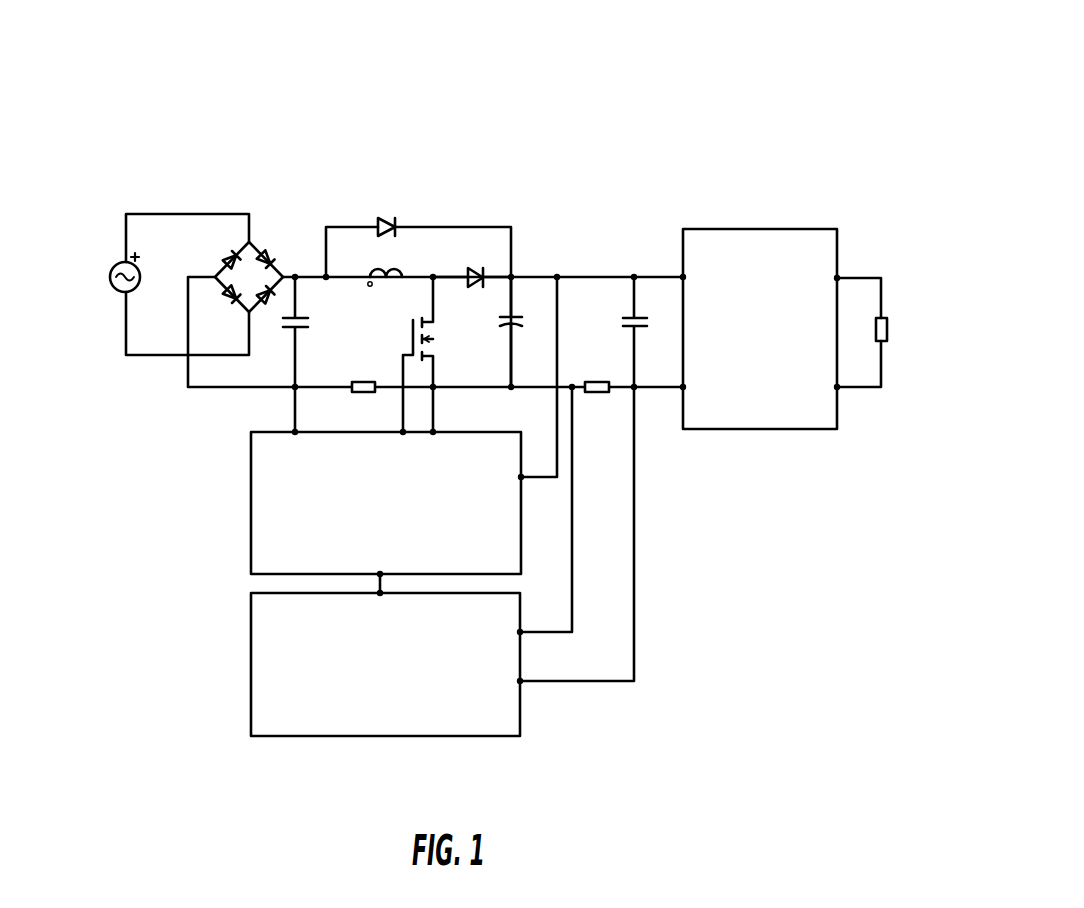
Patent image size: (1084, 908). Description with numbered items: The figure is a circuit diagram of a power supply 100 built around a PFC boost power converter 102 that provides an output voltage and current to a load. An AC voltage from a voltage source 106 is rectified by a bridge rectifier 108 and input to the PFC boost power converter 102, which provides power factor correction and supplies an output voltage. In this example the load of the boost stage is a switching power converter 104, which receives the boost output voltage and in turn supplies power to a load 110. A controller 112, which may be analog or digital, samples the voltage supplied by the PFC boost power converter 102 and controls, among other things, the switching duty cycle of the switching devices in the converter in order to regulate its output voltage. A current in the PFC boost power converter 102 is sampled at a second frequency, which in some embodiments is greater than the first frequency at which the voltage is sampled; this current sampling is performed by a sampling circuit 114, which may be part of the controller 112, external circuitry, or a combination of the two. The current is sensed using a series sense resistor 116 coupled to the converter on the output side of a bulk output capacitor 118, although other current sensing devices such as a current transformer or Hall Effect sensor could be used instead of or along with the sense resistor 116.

The power supply 100 is at (127, 140).
The PFC boost power converter 102 is at (430, 198).
The switching power converter 104 is at (768, 228).
The voltage source 106 is at (112, 273).
The bridge rectifier 108 is at (257, 250).
The load 110 is at (890, 313).
The controller 112 is at (251, 512).
The sampling circuit 114 is at (403, 736).
The sense resistor 116 is at (612, 395).
The bulk output capacitor 118 is at (522, 305).